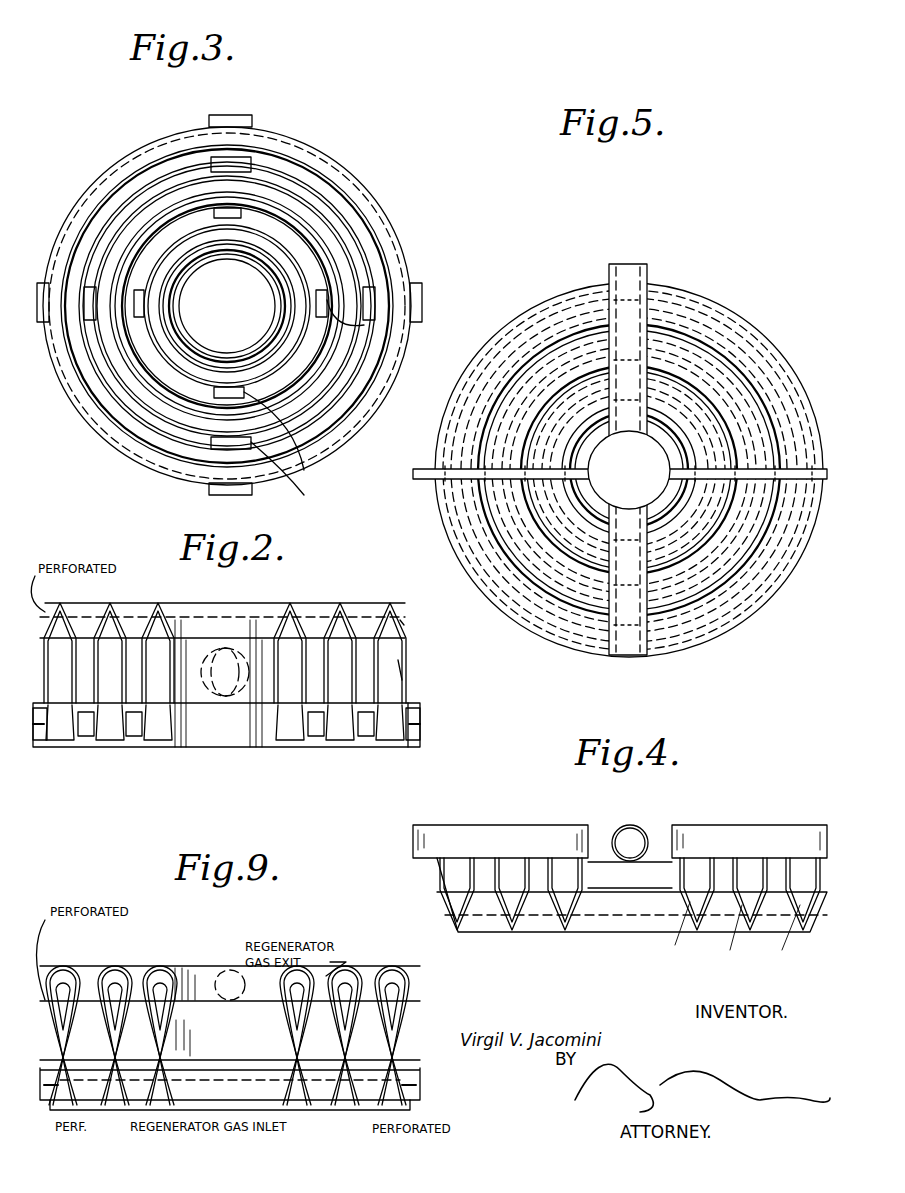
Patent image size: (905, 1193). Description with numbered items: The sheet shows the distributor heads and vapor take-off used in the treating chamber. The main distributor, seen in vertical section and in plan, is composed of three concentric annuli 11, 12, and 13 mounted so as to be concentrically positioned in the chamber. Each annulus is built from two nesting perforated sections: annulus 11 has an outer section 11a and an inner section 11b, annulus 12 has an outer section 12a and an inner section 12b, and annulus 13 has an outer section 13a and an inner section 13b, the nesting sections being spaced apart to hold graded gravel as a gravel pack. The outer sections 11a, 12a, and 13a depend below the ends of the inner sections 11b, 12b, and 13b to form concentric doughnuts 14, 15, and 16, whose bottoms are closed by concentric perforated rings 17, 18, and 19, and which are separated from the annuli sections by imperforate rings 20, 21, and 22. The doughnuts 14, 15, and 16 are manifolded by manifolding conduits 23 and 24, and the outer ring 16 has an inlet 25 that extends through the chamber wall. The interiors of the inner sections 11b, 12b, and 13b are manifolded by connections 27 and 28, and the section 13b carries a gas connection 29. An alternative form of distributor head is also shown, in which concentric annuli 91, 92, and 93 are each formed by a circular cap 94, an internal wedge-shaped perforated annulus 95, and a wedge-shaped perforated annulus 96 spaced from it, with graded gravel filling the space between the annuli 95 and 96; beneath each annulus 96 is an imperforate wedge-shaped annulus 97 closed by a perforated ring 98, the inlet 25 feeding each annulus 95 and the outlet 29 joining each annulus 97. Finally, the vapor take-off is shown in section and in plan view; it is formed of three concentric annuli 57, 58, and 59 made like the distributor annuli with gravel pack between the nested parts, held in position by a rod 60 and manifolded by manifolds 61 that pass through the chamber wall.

In FIG. 3, the annulus 11 is at (266, 246).
In FIG. 2, the annulus 11 is at (276, 640).
In FIG. 2, the outer section of annulus 11 11a is at (292, 606).
In FIG. 2, the inner section of annulus 11 11b is at (160, 612).
In FIG. 3, the annulus 12 is at (334, 250).
In FIG. 2, the annulus 12 is at (352, 622).
In FIG. 2, the outer section of annulus 12 12a is at (343, 606).
In FIG. 2, the inner section of annulus 12 12b is at (392, 606).
In FIG. 3, the annulus 13 is at (398, 266).
In FIG. 2, the annulus 13 is at (406, 614).
In FIG. 2, the outer section of annulus 13 13a is at (406, 631).
In FIG. 2, the inner section of annulus 13 13b is at (404, 669).
In FIG. 2, the doughnut 14 is at (283, 736).
In FIG. 2, the doughnut 15 is at (345, 740).
In FIG. 2, the doughnut 16 is at (392, 742).
In FIG. 2, the perforated ring 17 is at (414, 743).
In FIG. 2, the perforated ring 18 is at (296, 740).
In FIG. 2, the perforated ring 19 is at (291, 736).
In FIG. 2, the imperforate ring 20 is at (60, 706).
In FIG. 2, the imperforate ring 21 is at (120, 736).
In FIG. 2, the imperforate ring 22 is at (165, 736).
In FIG. 3, the manifolding conduit 23 is at (318, 320).
In FIG. 3, the manifolding conduit 24 is at (359, 330).
In FIG. 3, the inlet 25 is at (49, 290).
In FIG. 2, the inlet 25 is at (36, 740).
In FIG. 3, the connection 27 is at (246, 392).
In FIG. 3, the connection 28 is at (260, 442).
In FIG. 3, the gas connection 29 is at (226, 496).
In FIG. 2, the gas connection 29 is at (274, 592).
In FIG. 9, the gas connection 29 is at (229, 968).
In FIG. 5, the annulus 57 is at (466, 388).
In FIG. 4, the annulus 57 is at (468, 896).
In FIG. 5, the annulus 58 is at (506, 421).
In FIG. 4, the annulus 58 is at (510, 906).
In FIG. 5, the annulus 59 is at (556, 444).
In FIG. 4, the annulus 59 is at (580, 906).
In FIG. 5, the rod 60 is at (800, 468).
In FIG. 4, the rod 60 is at (515, 834).
In FIG. 5, the manifold 61 is at (648, 269).
In FIG. 4, the manifold 61 is at (640, 827).
In FIG. 9, the annulus 91 is at (70, 976).
In FIG. 9, the annulus 92 is at (117, 976).
In FIG. 9, the annulus 93 is at (170, 976).
In FIG. 9, the circular cap 94 is at (166, 976).
In FIG. 9, the wedge-shaped perforated annulus 95 is at (400, 976).
In FIG. 9, the wedge-shaped perforated annulus 96 is at (170, 1034).
In FIG. 9, the imperforate wedge-shaped annulus 97 is at (288, 1085).
In FIG. 9, the perforated ring 98 is at (400, 1109).